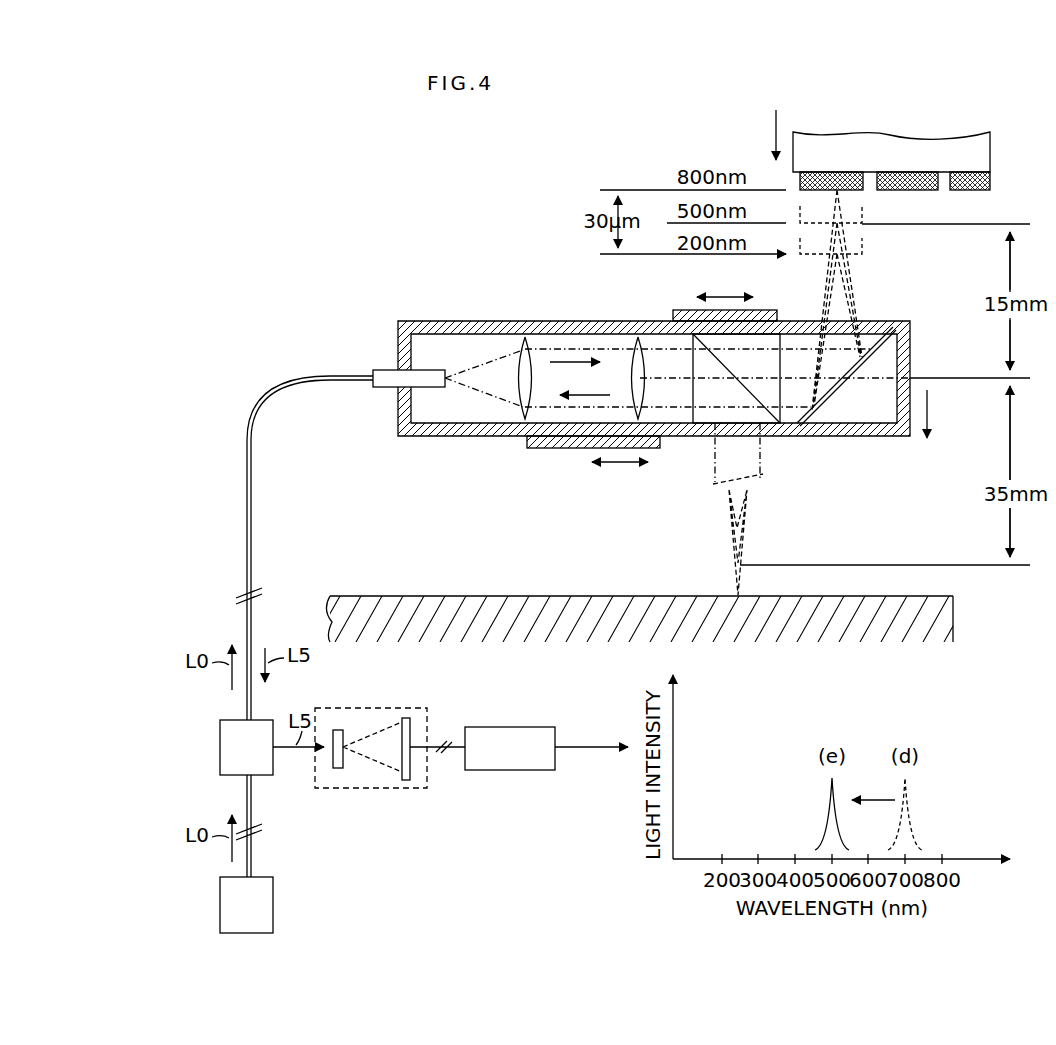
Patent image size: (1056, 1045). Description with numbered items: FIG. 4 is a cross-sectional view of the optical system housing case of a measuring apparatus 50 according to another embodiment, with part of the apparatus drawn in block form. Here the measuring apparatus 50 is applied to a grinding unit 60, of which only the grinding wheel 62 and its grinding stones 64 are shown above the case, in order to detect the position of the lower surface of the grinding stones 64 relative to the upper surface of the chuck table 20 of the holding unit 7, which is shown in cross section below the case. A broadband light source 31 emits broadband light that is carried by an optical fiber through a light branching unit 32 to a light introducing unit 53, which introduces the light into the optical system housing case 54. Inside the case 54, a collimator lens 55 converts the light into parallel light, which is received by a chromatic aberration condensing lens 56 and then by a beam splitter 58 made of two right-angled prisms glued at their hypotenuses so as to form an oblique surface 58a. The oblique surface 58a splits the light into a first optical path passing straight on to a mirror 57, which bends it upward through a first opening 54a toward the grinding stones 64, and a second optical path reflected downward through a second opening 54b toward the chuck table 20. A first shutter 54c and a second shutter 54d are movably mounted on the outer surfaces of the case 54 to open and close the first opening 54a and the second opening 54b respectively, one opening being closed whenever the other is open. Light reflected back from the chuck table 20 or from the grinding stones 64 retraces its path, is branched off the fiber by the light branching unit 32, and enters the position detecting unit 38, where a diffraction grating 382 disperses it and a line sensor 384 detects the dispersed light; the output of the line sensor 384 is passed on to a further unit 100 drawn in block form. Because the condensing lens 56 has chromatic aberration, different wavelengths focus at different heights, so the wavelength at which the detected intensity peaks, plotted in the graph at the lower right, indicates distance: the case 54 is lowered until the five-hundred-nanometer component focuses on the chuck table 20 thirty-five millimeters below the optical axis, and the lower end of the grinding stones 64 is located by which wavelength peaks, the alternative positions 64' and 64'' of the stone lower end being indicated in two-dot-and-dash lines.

The measuring apparatus 50 is at (388, 242).
The light introducing unit 53 is at (380, 370).
The optical system housing case 54 is at (463, 320).
The first opening 54a is at (808, 340).
The second opening 54b is at (698, 440).
The first shutter 54c is at (690, 311).
The second shutter 54d is at (540, 448).
The collimator lens 55 is at (524, 335).
The chromatic aberration condensing lens 56 is at (635, 335).
The mirror 57 is at (878, 328).
The beam splitter 58 is at (792, 432).
The oblique surface 58a is at (700, 345).
The grinding unit 60 is at (968, 132).
The grinding wheel 62 is at (990, 162).
The grinding stones 64 is at (842, 167).
The grinding stone position 64' is at (863, 215).
The grinding stone position 64'' is at (866, 251).
The holding unit 7 is at (393, 592).
The chuck table 20 is at (948, 612).
The broadband light source 31 is at (273, 905).
The light branching unit 32 is at (220, 752).
The position detecting unit 38 is at (376, 759).
The diffraction grating 382 is at (338, 730).
The line sensor 384 is at (407, 718).
The control unit 100 is at (515, 727).